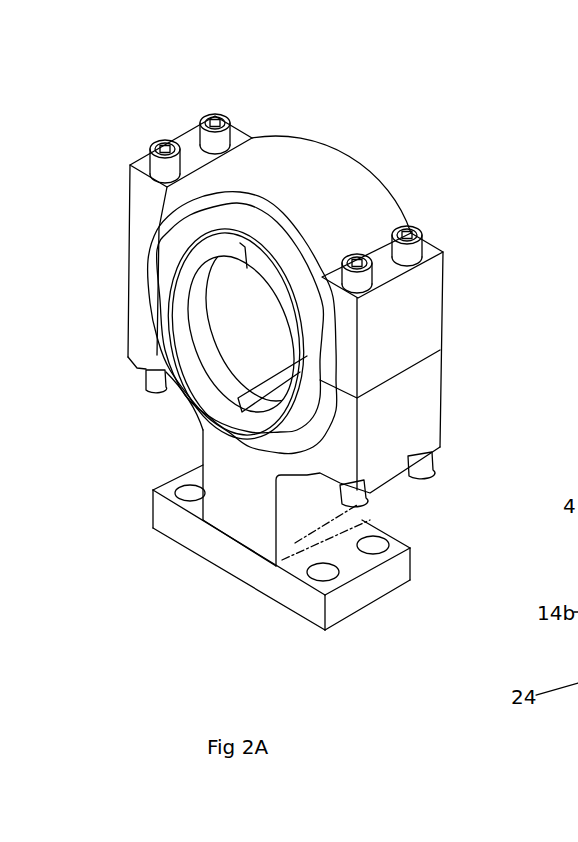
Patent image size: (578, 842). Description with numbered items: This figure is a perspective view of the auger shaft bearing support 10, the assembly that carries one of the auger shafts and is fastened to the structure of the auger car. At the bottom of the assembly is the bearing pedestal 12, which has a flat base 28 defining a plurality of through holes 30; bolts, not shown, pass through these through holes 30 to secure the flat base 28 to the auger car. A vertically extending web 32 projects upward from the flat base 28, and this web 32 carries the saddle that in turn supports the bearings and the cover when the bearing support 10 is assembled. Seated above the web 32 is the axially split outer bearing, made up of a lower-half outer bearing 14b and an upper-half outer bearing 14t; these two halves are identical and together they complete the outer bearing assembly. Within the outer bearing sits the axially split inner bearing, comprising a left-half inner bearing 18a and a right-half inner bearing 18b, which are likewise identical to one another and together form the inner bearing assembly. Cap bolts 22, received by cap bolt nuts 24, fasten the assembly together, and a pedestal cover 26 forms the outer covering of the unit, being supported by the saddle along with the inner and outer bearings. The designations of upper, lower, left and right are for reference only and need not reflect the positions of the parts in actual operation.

The auger shaft bearing support 10 is at (388, 136).
The bearing pedestal 12 is at (420, 557).
The upper-half outer bearing 14t is at (181, 223).
The lower-half outer bearing 14b is at (250, 430).
The left-half inner bearing 18a is at (178, 290).
The right-half inner bearing 18b is at (307, 372).
The cap bolts 22 is at (372, 262).
The cap bolt nuts 24 is at (368, 490).
The pedestal cover 26 is at (356, 212).
The flat base 28 is at (298, 600).
The through holes 30 is at (188, 498).
The web 32 is at (240, 505).